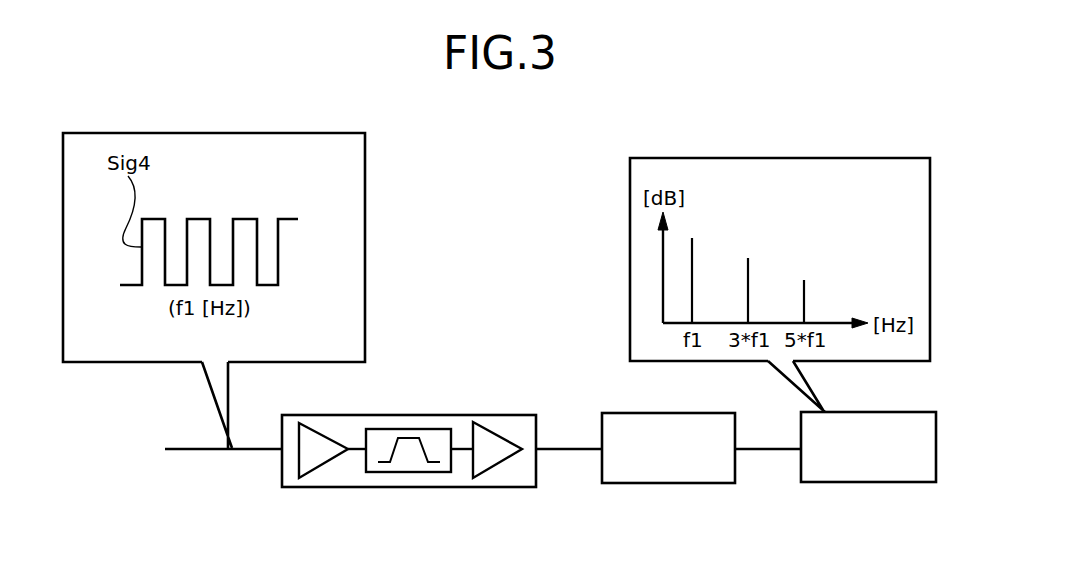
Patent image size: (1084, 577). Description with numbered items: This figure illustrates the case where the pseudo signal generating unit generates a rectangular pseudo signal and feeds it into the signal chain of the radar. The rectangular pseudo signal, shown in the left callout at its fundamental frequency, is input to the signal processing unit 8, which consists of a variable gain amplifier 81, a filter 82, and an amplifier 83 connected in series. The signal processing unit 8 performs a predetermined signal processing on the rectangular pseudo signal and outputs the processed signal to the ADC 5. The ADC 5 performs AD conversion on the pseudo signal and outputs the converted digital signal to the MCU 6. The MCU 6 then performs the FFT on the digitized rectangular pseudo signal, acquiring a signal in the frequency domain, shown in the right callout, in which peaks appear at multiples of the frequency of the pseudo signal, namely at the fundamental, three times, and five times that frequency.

The signal processing unit 8 is at (409, 453).
The variable gain amplifier 81 is at (327, 466).
The filter 82 is at (407, 472).
The amplifier 83 is at (493, 468).
The analog-digital converter (ADC) 5 is at (667, 483).
The micro control unit (MCU) 6 is at (866, 482).